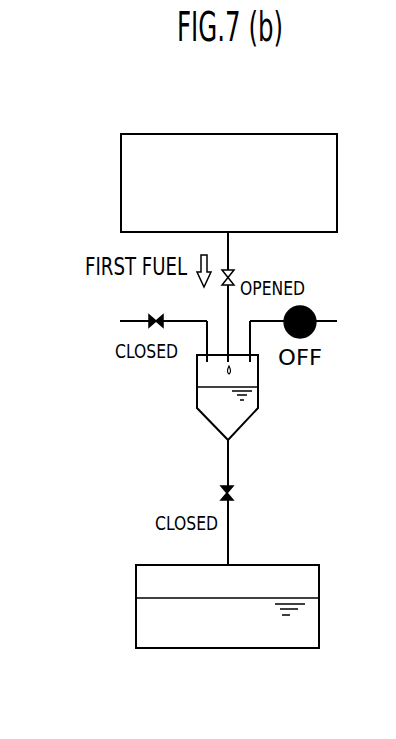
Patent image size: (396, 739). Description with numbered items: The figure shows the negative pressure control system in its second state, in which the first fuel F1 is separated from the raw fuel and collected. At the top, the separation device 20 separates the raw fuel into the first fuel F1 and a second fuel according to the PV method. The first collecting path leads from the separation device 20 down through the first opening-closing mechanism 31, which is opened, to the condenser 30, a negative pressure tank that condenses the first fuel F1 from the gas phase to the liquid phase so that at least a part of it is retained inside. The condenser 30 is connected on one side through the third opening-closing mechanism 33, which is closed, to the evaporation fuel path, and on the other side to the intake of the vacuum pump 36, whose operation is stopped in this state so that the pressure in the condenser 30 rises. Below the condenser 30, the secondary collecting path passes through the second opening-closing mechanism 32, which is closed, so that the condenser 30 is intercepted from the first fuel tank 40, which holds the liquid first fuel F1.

The separation device 20 is at (287, 134).
The condenser 30 is at (258, 400).
The first opening-closing mechanism 31 is at (236, 273).
The second opening-closing mechanism 32 is at (236, 489).
The third opening-closing mechanism 33 is at (150, 316).
The vacuum pump 36 is at (311, 309).
The first fuel tank 40 is at (290, 565).
The first fuel F1 is at (197, 400).